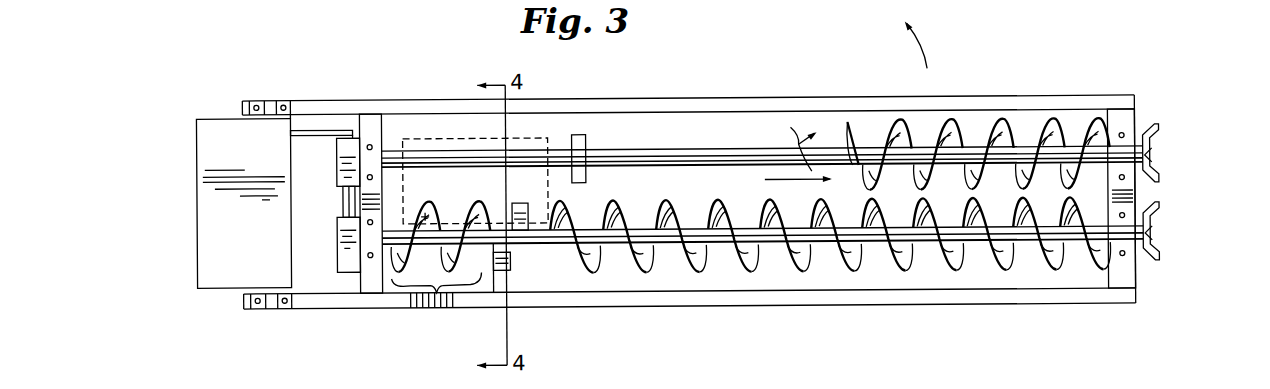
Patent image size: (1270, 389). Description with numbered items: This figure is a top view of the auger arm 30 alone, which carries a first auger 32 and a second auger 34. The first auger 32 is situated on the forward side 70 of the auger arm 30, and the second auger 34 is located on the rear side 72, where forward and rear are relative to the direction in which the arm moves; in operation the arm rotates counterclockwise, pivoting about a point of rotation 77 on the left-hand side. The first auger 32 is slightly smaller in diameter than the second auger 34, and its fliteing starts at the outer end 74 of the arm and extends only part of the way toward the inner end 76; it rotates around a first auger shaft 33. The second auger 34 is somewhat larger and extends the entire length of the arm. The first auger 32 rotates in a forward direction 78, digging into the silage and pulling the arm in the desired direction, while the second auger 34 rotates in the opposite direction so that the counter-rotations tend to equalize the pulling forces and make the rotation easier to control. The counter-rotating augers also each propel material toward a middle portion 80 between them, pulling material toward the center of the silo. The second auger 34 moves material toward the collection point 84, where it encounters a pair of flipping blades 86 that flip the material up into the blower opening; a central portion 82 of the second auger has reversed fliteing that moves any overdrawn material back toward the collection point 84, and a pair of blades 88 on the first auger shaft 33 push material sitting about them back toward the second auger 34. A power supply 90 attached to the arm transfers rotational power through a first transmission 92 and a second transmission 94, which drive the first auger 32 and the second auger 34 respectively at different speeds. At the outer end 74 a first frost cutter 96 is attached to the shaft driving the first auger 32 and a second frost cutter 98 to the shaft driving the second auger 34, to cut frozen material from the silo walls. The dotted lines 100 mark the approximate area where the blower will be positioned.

The auger arm 30 is at (945, 69).
The first auger 32 is at (1013, 126).
The first auger shaft 33 is at (708, 149).
The second auger 34 is at (1001, 266).
The forward side 70 is at (751, 97).
The rear side 72 is at (718, 298).
The outer end 74 is at (1128, 121).
The inner end 76 is at (372, 122).
The point of rotation 77 is at (436, 200).
The forward direction of rotation 78 is at (791, 143).
The middle portion 80 is at (782, 183).
The central portion 82 is at (437, 293).
The collection point 84 is at (529, 178).
The flipping blades 86 is at (493, 292).
The blades 88 is at (587, 176).
The power supply 90 is at (226, 273).
The first transmission 92 is at (341, 148).
The second transmission 94 is at (337, 270).
The first frost cutter 96 is at (1160, 158).
The second frost cutter 98 is at (1161, 232).
The dotted lines 100 is at (433, 130).